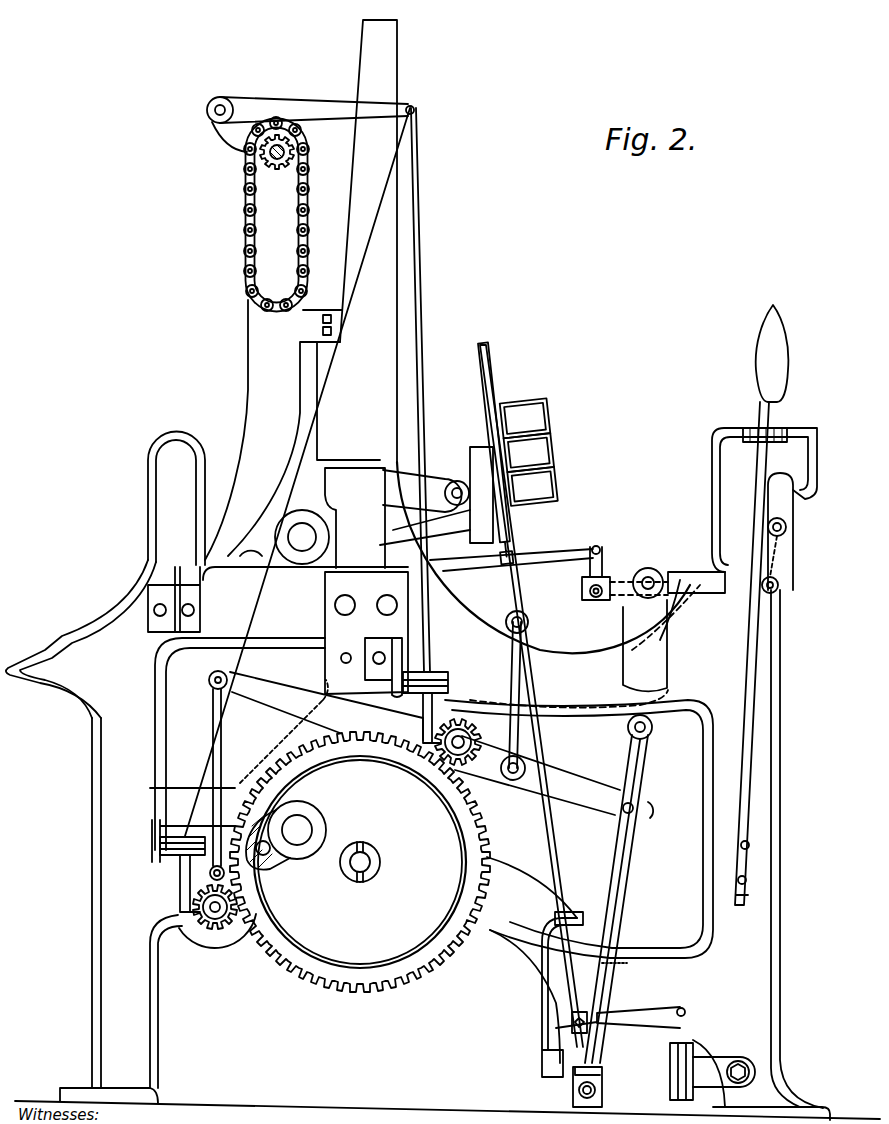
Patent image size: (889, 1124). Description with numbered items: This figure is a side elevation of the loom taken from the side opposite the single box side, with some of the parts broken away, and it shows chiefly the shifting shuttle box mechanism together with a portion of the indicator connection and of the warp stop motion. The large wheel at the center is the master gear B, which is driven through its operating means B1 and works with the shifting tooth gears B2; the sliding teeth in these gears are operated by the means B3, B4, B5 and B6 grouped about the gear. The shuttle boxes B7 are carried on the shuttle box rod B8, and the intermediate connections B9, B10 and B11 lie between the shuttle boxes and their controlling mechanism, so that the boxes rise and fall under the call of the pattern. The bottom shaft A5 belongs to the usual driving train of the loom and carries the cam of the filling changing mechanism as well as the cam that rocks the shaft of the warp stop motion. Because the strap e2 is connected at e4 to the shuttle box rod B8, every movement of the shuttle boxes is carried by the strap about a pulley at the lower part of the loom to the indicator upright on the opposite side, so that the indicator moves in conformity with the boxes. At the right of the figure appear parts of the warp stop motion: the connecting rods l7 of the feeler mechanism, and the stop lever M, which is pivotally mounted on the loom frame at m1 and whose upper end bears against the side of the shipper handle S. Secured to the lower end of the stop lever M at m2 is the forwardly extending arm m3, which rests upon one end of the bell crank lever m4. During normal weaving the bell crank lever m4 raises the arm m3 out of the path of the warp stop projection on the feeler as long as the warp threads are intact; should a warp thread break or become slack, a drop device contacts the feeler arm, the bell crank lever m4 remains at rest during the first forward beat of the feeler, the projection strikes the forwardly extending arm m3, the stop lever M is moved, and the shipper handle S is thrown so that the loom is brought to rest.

The master gear B is at (360, 862).
The operating means B1 is at (312, 828).
The shifting tooth gears B2 is at (460, 717).
The means for operating the sliding teeth B3 is at (430, 697).
The means for operating the sliding teeth B4 is at (418, 300).
The means for operating the sliding teeth B5 is at (314, 108).
The means for operating the sliding teeth B6 is at (247, 193).
The shuttle boxes B7 is at (553, 447).
The shuttle box rod B8 is at (543, 690).
The intermediate connection B9 is at (637, 840).
The intermediate connection B10 is at (552, 776).
The intermediate connection B11 is at (227, 748).
The bottom shaft A5 is at (362, 862).
The connecting rods l7 is at (542, 557).
The pivot m1 is at (781, 535).
The connection point m2 is at (778, 587).
The forwardly extending arm m3 is at (690, 574).
The bell crank lever m4 is at (690, 612).
The stop lever M is at (790, 511).
The shipper handle S is at (777, 405).
The strap e2 is at (692, 1030).
The connection e4 is at (668, 1010).